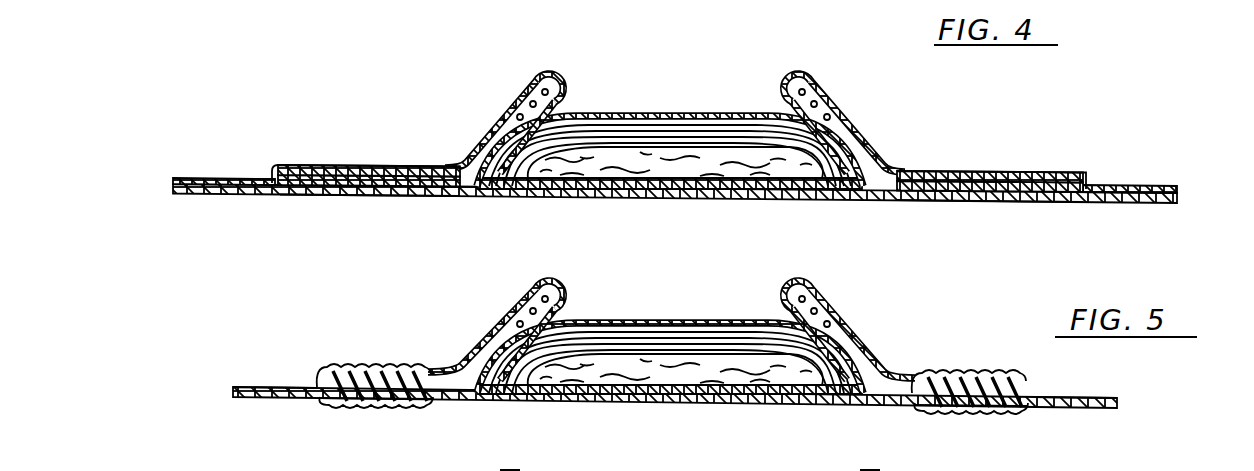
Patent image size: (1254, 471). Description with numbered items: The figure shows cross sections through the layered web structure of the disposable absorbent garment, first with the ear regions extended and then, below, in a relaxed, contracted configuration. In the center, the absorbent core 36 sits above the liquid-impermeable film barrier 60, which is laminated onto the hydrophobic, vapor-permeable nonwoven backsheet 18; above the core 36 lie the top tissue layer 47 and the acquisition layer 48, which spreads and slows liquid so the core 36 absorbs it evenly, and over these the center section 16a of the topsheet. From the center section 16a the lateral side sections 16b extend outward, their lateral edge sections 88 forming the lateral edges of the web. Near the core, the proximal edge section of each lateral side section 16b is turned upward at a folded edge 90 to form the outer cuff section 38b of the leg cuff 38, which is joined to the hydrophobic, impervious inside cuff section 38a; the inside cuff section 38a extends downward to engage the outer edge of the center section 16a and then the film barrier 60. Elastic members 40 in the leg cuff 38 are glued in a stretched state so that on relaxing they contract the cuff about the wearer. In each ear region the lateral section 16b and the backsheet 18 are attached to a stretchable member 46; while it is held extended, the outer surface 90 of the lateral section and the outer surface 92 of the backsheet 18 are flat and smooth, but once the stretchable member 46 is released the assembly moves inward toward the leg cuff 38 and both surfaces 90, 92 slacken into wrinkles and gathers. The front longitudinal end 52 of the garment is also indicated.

In FIG. 4, the center section 16a is at (698, 113).
In FIG. 5, the center section 16a is at (656, 320).
In FIG. 4, the lateral side section 16b is at (370, 165).
In FIG. 4, the backsheet 18 is at (872, 200).
In FIG. 5, the backsheet 18 is at (873, 409).
In FIG. 4, the absorbent core 36 is at (697, 189).
In FIG. 5, the absorbent core 36 is at (727, 385).
In FIG. 5, the leg cuff 38 is at (574, 291).
In FIG. 4, the inside cuff section 38a is at (556, 118).
In FIG. 5, the inside cuff section 38a is at (868, 347).
In FIG. 4, the outer cuff section 38b is at (505, 112).
In FIG. 4, the elastic member 40 is at (532, 88).
In FIG. 5, the elastic member 40 is at (551, 305).
In FIG. 4, the stretchable member 46 is at (348, 190).
In FIG. 5, the stretchable member 46 is at (386, 408).
In FIG. 4, the top tissue layer 47 is at (650, 135).
In FIG. 5, the top tissue layer 47 is at (687, 345).
In FIG. 4, the acquisition layer 48 is at (604, 125).
In FIG. 5, the acquisition layer 48 is at (585, 330).
In FIG. 5, the front longitudinal end 52 is at (507, 470).
In FIG. 4, the film barrier 60 is at (620, 190).
In FIG. 5, the film barrier 60 is at (597, 410).
In FIG. 4, the lateral edge section 88 is at (173, 183).
In FIG. 5, the lateral edge section 88 is at (235, 387).
In FIG. 4, the folded edge 90 is at (300, 162).
In FIG. 5, the folded edge 90 is at (335, 362).
In FIG. 4, the outer surface of backsheet 92 is at (302, 202).
In FIG. 5, the outer surface of backsheet 92 is at (338, 416).